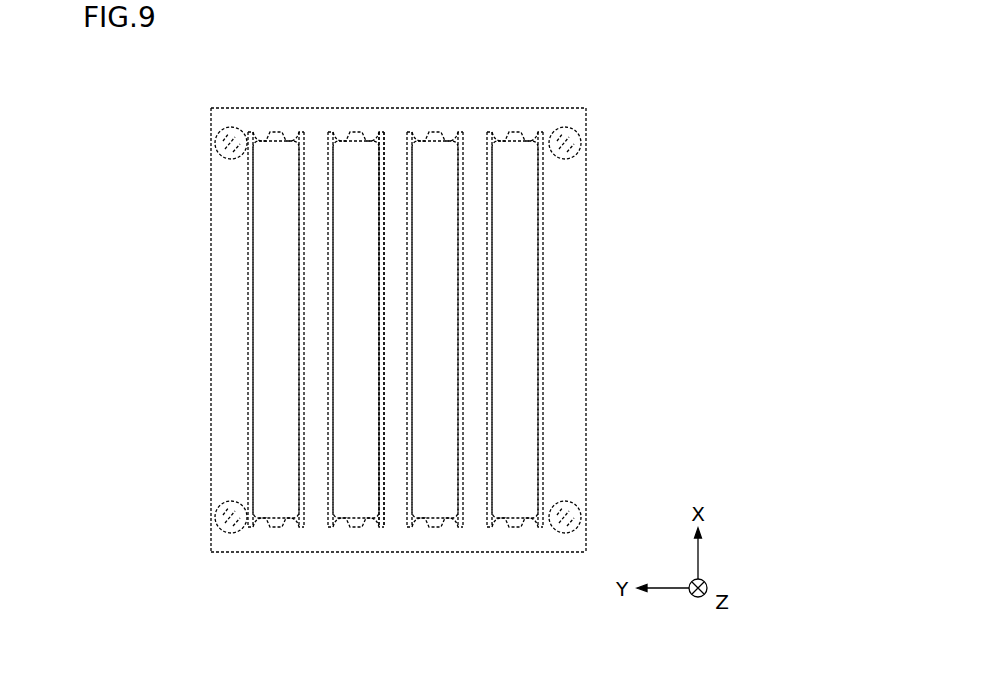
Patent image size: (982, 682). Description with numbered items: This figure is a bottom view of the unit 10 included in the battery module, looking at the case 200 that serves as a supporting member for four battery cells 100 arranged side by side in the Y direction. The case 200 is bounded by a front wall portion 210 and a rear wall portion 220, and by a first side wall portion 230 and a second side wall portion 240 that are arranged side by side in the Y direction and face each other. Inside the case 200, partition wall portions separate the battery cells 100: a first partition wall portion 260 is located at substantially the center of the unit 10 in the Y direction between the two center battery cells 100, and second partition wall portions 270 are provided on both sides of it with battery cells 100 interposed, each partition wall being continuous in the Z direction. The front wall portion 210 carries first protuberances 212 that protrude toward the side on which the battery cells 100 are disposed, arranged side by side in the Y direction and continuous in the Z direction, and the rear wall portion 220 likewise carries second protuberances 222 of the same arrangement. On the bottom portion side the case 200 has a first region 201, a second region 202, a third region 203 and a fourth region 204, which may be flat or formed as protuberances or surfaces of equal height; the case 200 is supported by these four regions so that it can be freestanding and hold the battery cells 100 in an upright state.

The unit 10 is at (207, 102).
The battery cell 100 is at (515, 282).
The case 200 is at (572, 105).
The first region 201 is at (240, 140).
The second region 202 is at (556, 142).
The third region 203 is at (240, 515).
The fourth region 204 is at (556, 517).
The front wall portion 210 is at (396, 203).
The first protuberance 212 is at (258, 143).
The rear wall portion 220 is at (395, 537).
The second protuberance 222 is at (258, 516).
The first side wall portion 230 is at (228, 330).
The second side wall portion 240 is at (565, 330).
The first partition wall portion 260 is at (410, 165).
The second partition wall portion 270 is at (317, 205).